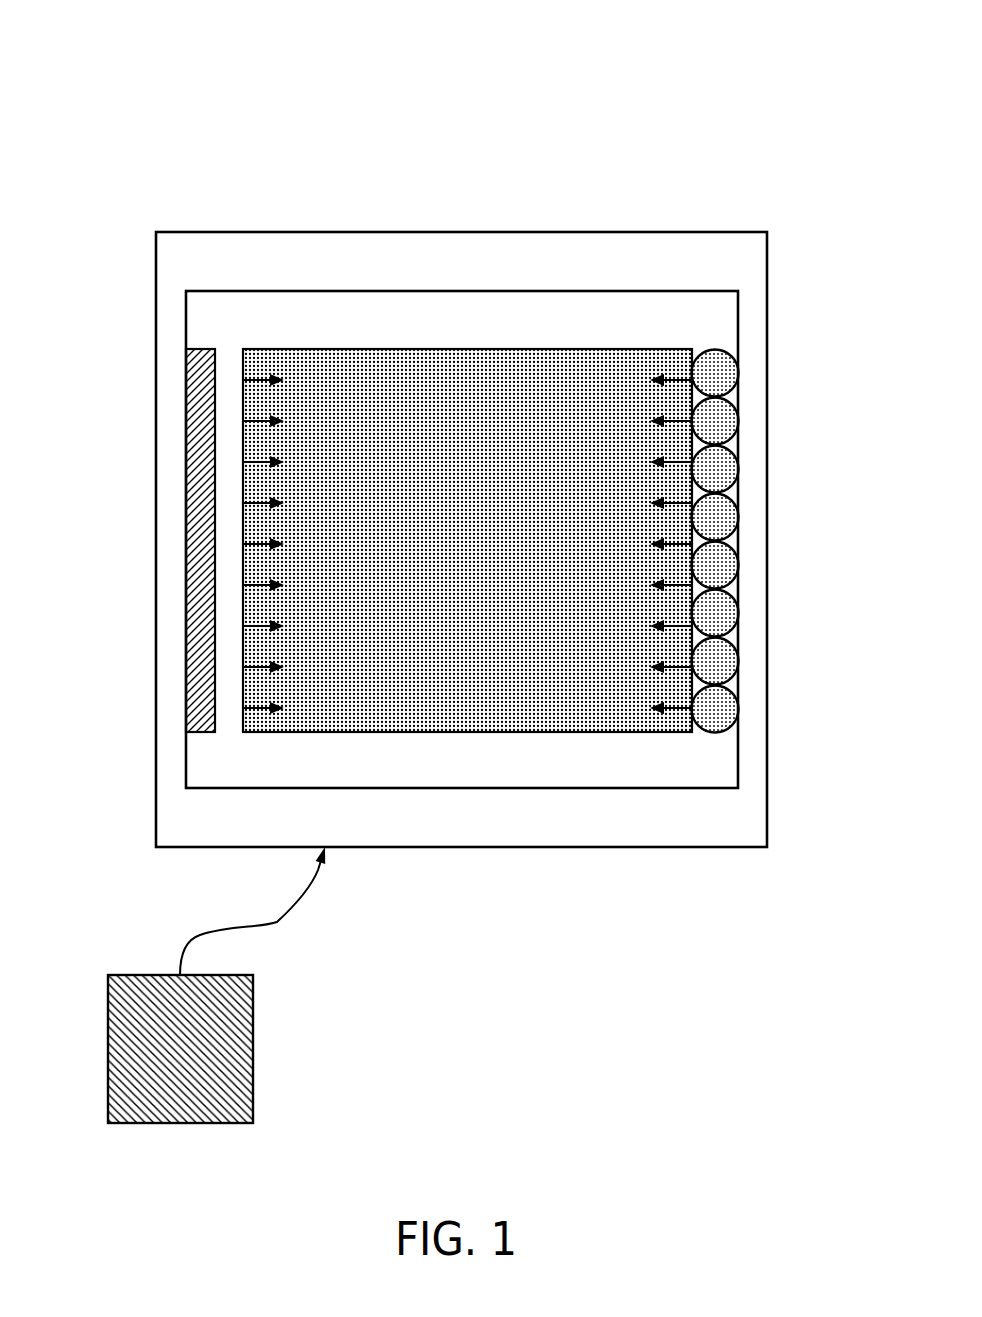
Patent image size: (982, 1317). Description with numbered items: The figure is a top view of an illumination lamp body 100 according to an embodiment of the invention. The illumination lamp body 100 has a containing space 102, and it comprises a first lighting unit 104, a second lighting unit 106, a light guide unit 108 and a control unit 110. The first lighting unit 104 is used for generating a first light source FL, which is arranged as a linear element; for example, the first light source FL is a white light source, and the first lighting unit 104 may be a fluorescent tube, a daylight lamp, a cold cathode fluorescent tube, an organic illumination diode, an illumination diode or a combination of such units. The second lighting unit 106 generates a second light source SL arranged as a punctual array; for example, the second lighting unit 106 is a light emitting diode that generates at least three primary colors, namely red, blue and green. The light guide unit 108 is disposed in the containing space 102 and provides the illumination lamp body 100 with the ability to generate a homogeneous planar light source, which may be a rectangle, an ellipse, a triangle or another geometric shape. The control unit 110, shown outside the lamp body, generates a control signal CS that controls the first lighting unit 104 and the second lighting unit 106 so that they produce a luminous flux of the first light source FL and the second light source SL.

The illumination lamp body 100 is at (467, 130).
The containing space 102 is at (680, 817).
The first lighting unit 104 is at (195, 530).
The second lighting unit 106 is at (718, 420).
The light guide unit 108 is at (463, 680).
The control unit 110 is at (232, 1055).
The first light source FL is at (266, 378).
The second light source SL is at (681, 378).
The control signal CS is at (277, 922).